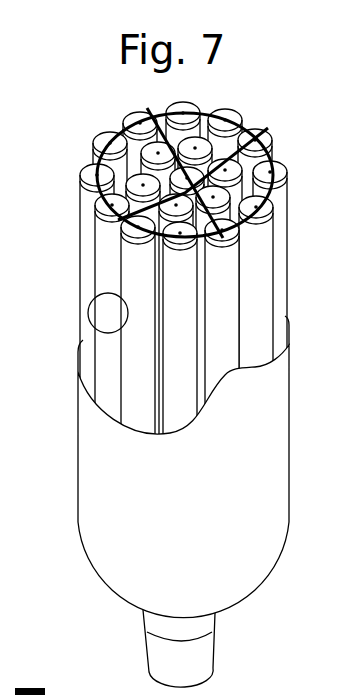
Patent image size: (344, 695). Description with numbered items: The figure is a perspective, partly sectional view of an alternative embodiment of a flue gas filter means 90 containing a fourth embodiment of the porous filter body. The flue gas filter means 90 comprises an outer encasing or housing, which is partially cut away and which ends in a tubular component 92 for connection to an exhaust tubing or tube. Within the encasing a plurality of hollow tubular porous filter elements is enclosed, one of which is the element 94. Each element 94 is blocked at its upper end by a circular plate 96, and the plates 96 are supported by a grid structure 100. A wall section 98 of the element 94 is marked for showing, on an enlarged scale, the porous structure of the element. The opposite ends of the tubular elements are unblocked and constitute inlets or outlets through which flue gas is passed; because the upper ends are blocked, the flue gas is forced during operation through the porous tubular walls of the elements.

The flue gas filter means 90 is at (125, 569).
The tubular component 92 is at (157, 667).
The hollow tubular porous filter element 94 is at (103, 258).
The circular plate 96 is at (100, 210).
The wall section 98 is at (98, 313).
The grid structure 100 is at (147, 108).